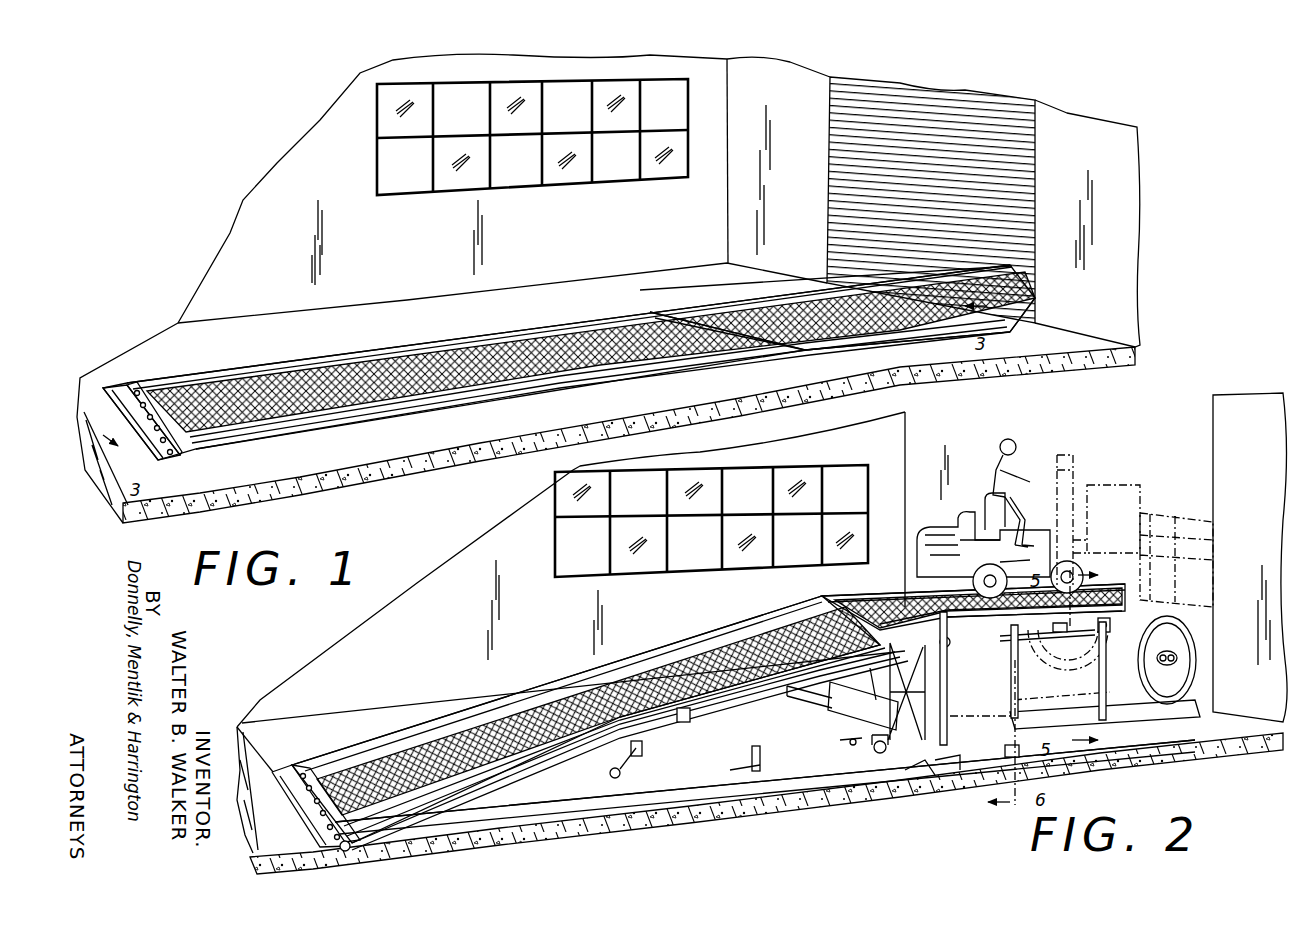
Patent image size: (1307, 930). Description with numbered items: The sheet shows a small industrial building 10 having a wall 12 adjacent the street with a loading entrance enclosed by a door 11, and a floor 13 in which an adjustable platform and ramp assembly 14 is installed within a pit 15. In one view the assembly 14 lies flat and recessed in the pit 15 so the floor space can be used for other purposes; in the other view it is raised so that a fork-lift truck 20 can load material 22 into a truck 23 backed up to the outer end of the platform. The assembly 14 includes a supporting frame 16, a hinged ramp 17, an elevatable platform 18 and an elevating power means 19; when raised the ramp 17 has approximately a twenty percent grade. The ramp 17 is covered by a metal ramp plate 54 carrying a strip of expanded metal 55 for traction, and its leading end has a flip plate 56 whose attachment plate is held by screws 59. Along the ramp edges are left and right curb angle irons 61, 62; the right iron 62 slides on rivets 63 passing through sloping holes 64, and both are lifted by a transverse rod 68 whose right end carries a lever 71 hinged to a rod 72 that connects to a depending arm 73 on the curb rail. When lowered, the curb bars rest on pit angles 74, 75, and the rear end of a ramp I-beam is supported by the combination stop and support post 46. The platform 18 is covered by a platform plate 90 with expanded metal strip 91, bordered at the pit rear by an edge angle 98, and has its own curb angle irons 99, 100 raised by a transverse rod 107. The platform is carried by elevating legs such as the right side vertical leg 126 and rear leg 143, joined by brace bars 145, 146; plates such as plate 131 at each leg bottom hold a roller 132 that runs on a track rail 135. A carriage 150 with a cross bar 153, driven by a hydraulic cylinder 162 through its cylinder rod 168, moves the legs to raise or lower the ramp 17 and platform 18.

In FIG. 1, the industrial building 10 is at (243, 212).
In FIG. 2, the industrial building 10 is at (418, 580).
In FIG. 1, the door 11 is at (985, 100).
In FIG. 1, the wall 12 is at (1085, 125).
In FIG. 2, the wall 12 is at (1240, 400).
In FIG. 1, the floor 13 is at (1060, 350).
In FIG. 2, the floor 13 is at (1215, 725).
In FIG. 1, the adjustable platform and ramp assembly 14 is at (520, 343).
In FIG. 2, the adjustable platform and ramp assembly 14 is at (555, 672).
In FIG. 2, the pit 15 is at (690, 795).
In FIG. 2, the supporting frame 16 is at (736, 766).
In FIG. 1, the hinged ramp 17 is at (336, 360).
In FIG. 2, the hinged ramp 17 is at (420, 752).
In FIG. 1, the elevatable platform 18 is at (718, 300).
In FIG. 2, the elevatable platform 18 is at (898, 593).
In FIG. 2, the elevating power means 19 is at (952, 702).
In FIG. 2, the fork-lift truck 20 is at (949, 518).
In FIG. 2, the material 22 is at (1115, 482).
In FIG. 2, the truck 23 is at (1168, 510).
In FIG. 2, the combination stop and support post 46 is at (764, 750).
In FIG. 1, the ramp plate 54 is at (240, 375).
In FIG. 2, the ramp plate 54 is at (367, 755).
In FIG. 1, the expanded metal strip 55 is at (162, 403).
In FIG. 2, the expanded metal strip 55 is at (343, 780).
In FIG. 1, the flip plate 56 is at (172, 457).
In FIG. 2, the flip plate 56 is at (293, 805).
In FIG. 1, the screws 59 is at (196, 437).
In FIG. 2, the screws 59 is at (327, 820).
In FIG. 1, the left side curb angle iron 61 is at (400, 347).
In FIG. 2, the left side curb angle iron 61 is at (463, 712).
In FIG. 1, the right side curb angle iron 62 is at (378, 418).
In FIG. 2, the right side curb angle iron 62 is at (495, 792).
In FIG. 2, the rivets 63 is at (341, 848).
In FIG. 2, the sloping holes 64 is at (943, 648).
In FIG. 2, the transverse rod 68 is at (608, 785).
In FIG. 2, the lever 71 is at (620, 774).
In FIG. 2, the rod 72 is at (640, 764).
In FIG. 2, the depending arm 73 is at (644, 748).
In FIG. 2, the longitudinal angle 74 is at (797, 775).
In FIG. 2, the pit left side angle bar 75 is at (834, 741).
In FIG. 1, the platform plate 90 is at (857, 338).
In FIG. 1, the expanded metal strip 91 is at (800, 336).
In FIG. 2, the expanded metal strip 91 is at (1016, 567).
In FIG. 2, the border angle 98 is at (1140, 700).
In FIG. 1, the left side curb angle iron 99 is at (768, 304).
In FIG. 2, the left side curb angle iron 99 is at (862, 597).
In FIG. 1, the right side curb angle iron 100 is at (918, 330).
In FIG. 2, the right side curb angle iron 100 is at (987, 617).
In FIG. 2, the transverse rod 107 is at (1030, 637).
In FIG. 2, the right side vertical leg 126 is at (962, 710).
In FIG. 2, the plate 131 is at (886, 680).
In FIG. 2, the roller 132 is at (886, 741).
In FIG. 2, the track rail 135 is at (846, 741).
In FIG. 2, the leg 143 is at (1108, 672).
In FIG. 2, the transverse brace bar 145 is at (1110, 626).
In FIG. 2, the transverse brace bar 146 is at (1100, 718).
In FIG. 2, the carriage 150 is at (1006, 752).
In FIG. 2, the cross bar 153 is at (956, 760).
In FIG. 2, the hydraulic cylinder 162 is at (840, 698).
In FIG. 2, the cylinder rod 168 is at (918, 766).